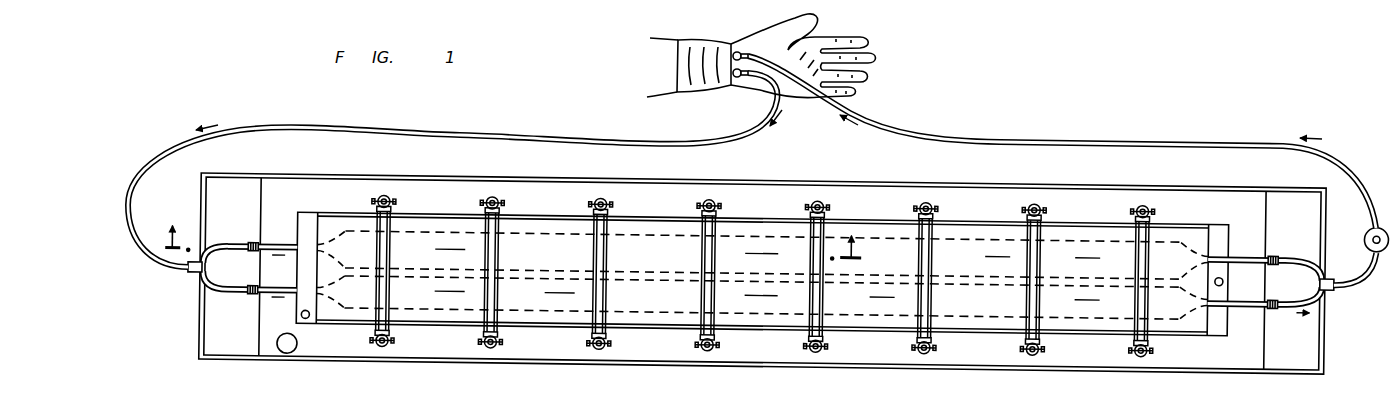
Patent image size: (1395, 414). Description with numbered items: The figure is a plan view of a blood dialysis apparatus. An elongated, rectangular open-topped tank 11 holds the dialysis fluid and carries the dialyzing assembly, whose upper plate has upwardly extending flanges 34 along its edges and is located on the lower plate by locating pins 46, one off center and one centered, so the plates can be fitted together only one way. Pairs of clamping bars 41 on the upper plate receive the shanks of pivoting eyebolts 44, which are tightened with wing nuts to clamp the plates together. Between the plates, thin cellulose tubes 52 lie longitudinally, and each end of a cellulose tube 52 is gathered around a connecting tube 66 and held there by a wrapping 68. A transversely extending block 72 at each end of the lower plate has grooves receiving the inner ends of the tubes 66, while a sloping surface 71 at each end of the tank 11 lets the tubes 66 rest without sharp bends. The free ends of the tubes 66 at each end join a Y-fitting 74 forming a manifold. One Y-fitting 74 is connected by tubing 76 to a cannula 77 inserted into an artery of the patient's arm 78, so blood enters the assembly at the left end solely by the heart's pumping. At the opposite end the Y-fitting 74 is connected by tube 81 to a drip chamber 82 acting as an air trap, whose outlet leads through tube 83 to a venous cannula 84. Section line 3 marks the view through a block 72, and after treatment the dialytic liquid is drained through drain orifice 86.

The section line 3- 3 is at (520, 232).
The tank 11 is at (540, 359).
The upwardly extending flanges 34 is at (452, 322).
The clamping bars 41 is at (708, 293).
The eyebolts 44 is at (712, 337).
The locating pins 46 is at (302, 313).
The cellulose tubes 52 is at (300, 240).
The tube 66 is at (228, 242).
The wrapping 68 is at (252, 241).
The sloping surface 71 is at (222, 354).
The block 72 is at (303, 211).
The Y-fittings 74 is at (210, 267).
The tubing 76 is at (398, 127).
The cannula 77 is at (736, 80).
The arm 78 is at (697, 40).
The tube 81 is at (1366, 259).
The drip chamber 82 is at (1366, 219).
The tube 83 is at (1117, 136).
The cannula 84 is at (741, 50).
The drain orifice 86 is at (288, 352).